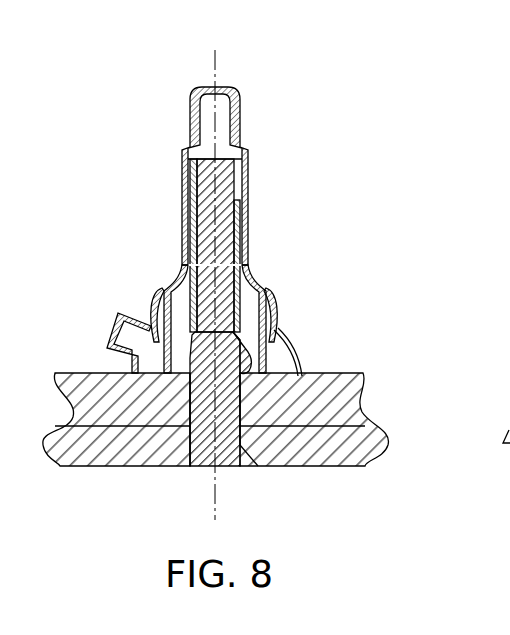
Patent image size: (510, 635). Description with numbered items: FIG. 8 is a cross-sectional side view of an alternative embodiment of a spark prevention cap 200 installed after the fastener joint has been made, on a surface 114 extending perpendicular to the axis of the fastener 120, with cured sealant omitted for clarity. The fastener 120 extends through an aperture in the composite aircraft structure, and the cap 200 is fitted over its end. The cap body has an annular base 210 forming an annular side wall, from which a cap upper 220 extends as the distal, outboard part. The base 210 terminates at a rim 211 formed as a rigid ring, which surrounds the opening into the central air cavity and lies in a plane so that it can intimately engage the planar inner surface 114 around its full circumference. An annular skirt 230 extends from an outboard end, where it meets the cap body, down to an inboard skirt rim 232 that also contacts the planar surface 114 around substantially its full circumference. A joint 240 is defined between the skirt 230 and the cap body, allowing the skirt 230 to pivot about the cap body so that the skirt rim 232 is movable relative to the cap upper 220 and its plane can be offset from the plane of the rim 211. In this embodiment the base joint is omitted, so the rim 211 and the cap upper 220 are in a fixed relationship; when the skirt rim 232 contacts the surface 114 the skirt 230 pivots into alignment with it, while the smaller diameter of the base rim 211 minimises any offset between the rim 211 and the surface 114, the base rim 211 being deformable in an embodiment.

The cap 200 is at (299, 264).
The cap upper 220 is at (246, 196).
The annular base 210 is at (265, 302).
The annular skirt 230 is at (294, 350).
The skirt rim 232 is at (296, 376).
The joint 240 is at (134, 284).
The inner surface 114 is at (85, 373).
The fastener 120 is at (206, 452).
The rim 211 is at (258, 373).